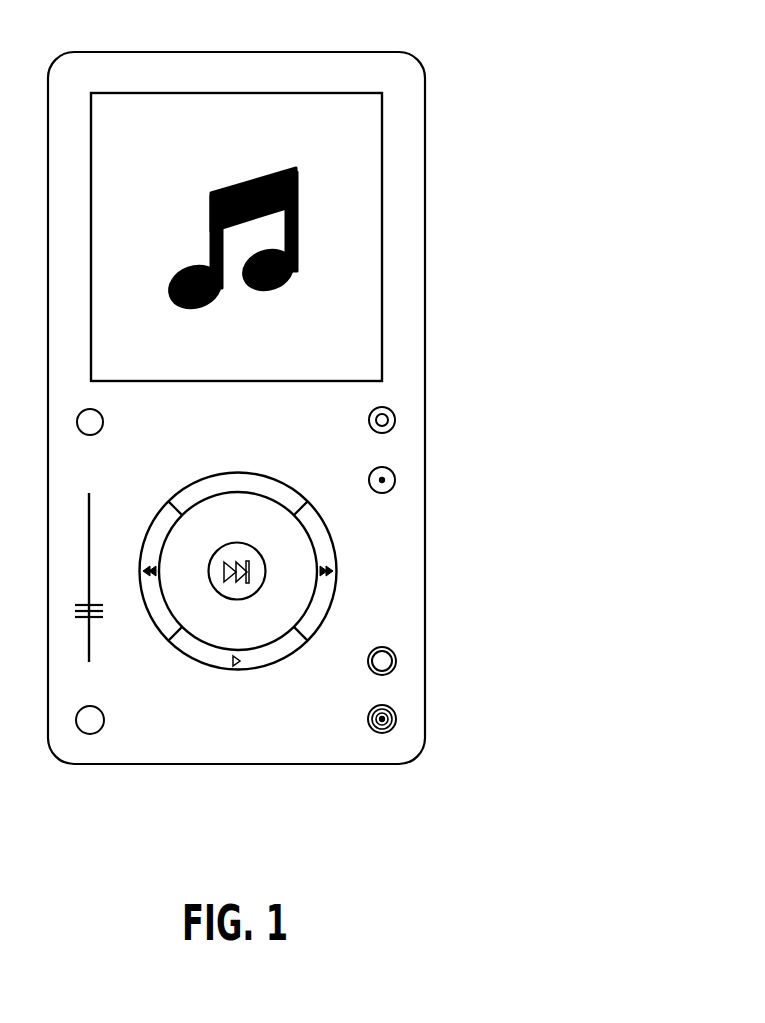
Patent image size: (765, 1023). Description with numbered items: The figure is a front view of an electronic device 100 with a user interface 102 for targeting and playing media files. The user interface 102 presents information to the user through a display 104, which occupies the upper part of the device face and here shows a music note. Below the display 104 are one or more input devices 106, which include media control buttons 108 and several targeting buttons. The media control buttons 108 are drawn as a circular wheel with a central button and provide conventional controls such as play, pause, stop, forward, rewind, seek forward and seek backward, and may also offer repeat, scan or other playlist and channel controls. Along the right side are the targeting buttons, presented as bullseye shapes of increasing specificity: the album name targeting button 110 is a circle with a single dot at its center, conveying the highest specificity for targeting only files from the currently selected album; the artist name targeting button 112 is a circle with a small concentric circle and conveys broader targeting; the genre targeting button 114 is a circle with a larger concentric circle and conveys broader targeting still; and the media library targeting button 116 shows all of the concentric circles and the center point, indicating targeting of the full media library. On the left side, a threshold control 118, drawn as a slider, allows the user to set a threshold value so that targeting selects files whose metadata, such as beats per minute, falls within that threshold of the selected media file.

The electronic device 100 is at (522, 34).
The user interface 102 is at (570, 290).
The display 104 is at (357, 253).
The input devices 106 is at (408, 455).
The media control buttons 108 is at (356, 538).
The album name targeting button 110 is at (395, 483).
The artist name targeting button 112 is at (395, 418).
The genre targeting button 114 is at (396, 655).
The media library targeting button 116 is at (395, 710).
The threshold control 118 is at (89, 553).